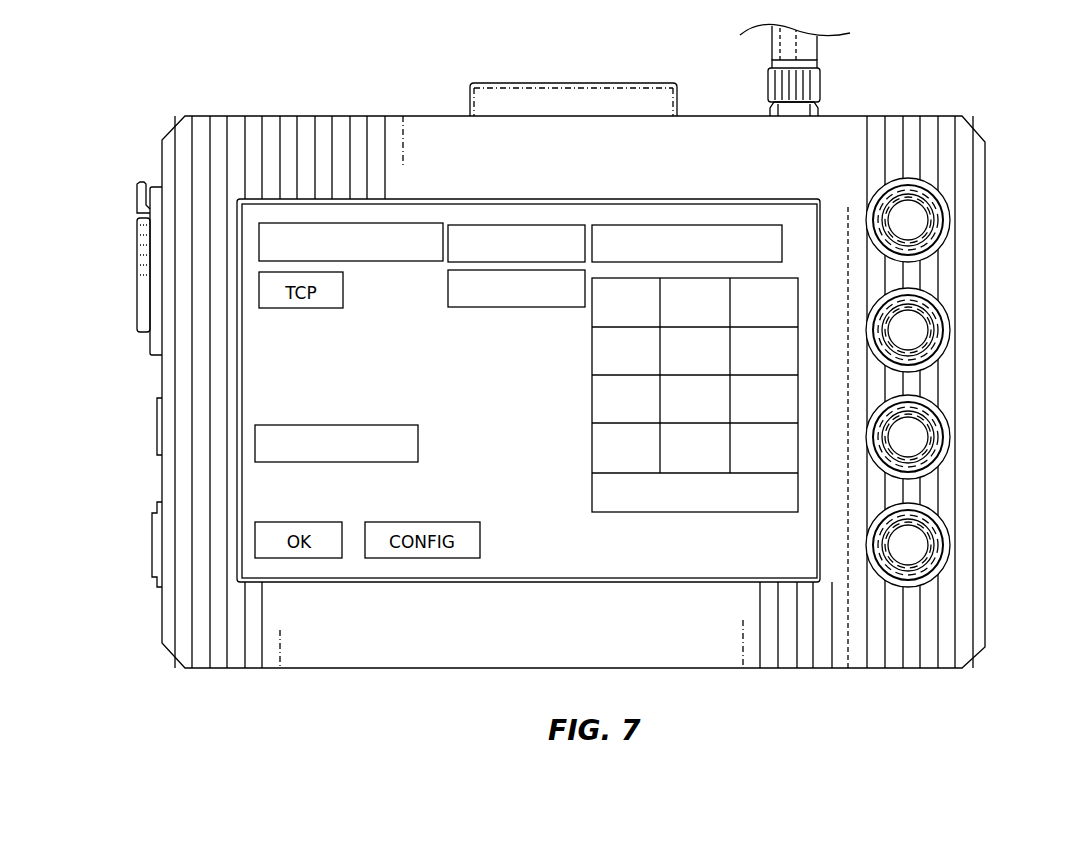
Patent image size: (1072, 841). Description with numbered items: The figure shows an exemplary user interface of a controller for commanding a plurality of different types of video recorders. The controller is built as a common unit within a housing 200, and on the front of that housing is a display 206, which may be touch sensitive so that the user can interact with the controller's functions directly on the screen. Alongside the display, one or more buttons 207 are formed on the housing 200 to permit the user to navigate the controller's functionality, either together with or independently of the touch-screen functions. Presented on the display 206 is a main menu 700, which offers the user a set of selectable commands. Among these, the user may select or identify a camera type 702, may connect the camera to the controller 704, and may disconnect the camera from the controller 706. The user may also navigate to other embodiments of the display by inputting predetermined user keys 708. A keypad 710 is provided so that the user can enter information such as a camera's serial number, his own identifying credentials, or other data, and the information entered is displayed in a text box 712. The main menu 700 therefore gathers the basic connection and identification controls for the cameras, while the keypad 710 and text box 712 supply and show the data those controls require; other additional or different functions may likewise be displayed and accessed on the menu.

The housing 200 is at (377, 655).
The display 206 is at (528, 390).
The buttons 207 is at (908, 338).
The main menu 700 is at (242, 389).
The camera type 702 is at (427, 235).
The connect the camera to the controller 704 is at (458, 243).
The disconnect the camera from the controller 706 is at (457, 298).
The user keys 708 is at (412, 442).
The keypad 710 is at (592, 402).
The text box 712 is at (687, 243).